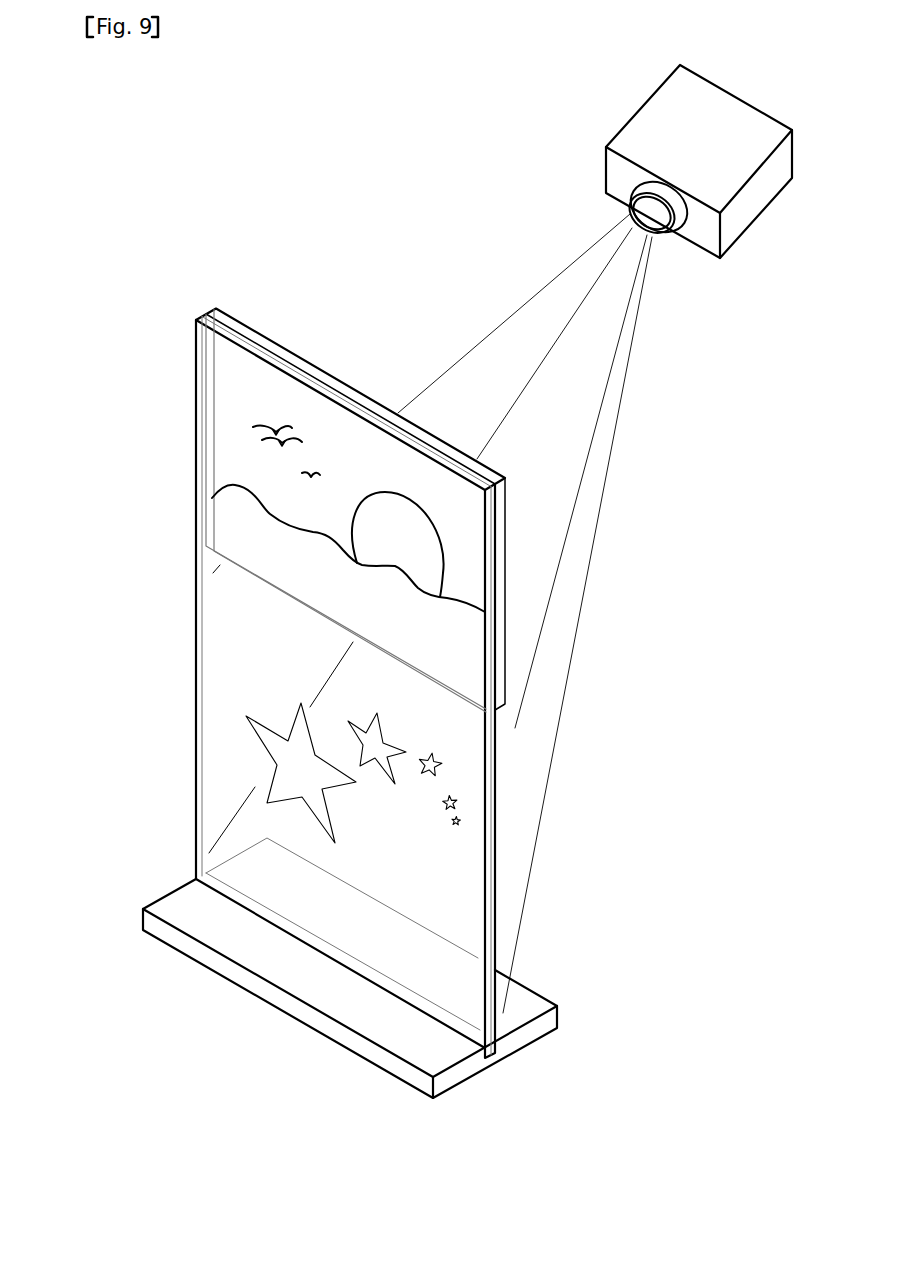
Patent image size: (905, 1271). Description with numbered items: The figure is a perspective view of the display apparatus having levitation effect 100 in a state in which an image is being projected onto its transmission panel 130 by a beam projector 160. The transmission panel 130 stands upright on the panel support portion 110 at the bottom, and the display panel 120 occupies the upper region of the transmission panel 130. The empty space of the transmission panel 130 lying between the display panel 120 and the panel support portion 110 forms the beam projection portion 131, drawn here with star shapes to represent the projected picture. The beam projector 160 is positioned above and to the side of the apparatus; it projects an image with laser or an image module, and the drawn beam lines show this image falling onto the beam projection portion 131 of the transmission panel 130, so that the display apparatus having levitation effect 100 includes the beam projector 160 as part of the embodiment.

The display apparatus having levitation effect 100 is at (278, 180).
The panel support portion 110 is at (312, 985).
The display panel 120 is at (330, 380).
The transmission panel 130 is at (196, 407).
The beam projection portion 131 is at (262, 672).
The beam projector 160 is at (662, 120).